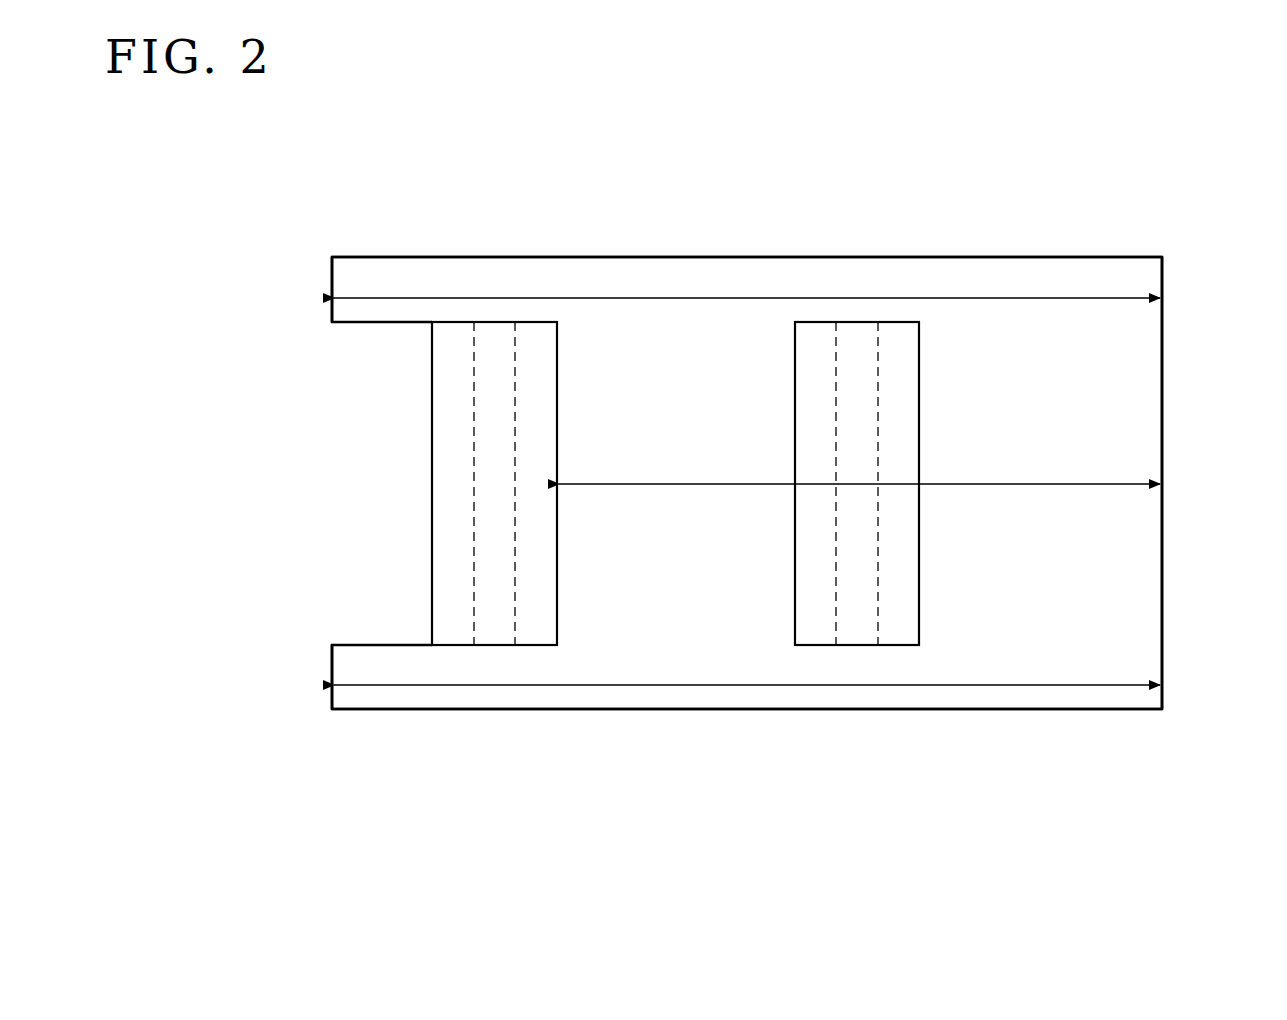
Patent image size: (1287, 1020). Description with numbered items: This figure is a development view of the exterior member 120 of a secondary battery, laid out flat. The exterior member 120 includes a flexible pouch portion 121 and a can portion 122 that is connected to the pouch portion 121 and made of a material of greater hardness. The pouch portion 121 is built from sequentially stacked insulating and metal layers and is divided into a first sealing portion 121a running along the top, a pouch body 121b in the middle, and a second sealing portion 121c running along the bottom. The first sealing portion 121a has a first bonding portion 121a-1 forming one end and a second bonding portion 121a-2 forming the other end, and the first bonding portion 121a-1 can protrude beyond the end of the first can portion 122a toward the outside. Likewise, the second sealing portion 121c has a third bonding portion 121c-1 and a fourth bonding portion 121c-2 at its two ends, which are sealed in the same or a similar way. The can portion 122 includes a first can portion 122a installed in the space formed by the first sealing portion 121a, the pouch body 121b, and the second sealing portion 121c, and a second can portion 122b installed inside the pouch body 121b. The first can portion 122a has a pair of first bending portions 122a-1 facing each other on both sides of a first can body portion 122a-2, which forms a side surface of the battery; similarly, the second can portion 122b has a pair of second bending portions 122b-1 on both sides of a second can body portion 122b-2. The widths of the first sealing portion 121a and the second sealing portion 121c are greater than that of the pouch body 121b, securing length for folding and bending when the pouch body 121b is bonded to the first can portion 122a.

The exterior member 120 is at (921, 207).
The pouch portion 121 is at (525, 201).
The first sealing portion 121a is at (527, 287).
The first bonding portion 121a-1 is at (332, 282).
The second bonding portion 121a-2 is at (1162, 285).
The pouch body 121b is at (616, 468).
The second sealing portion 121c is at (712, 667).
The third bonding portion 121c-1 is at (332, 693).
The fourth bonding portion 121c-2 is at (1162, 698).
The can portion 122 is at (473, 803).
The first can portion 122a is at (415, 760).
The first bending portions 122a-1 is at (457, 632).
The first can body portion 122a-2 is at (492, 632).
The second can portion 122b is at (780, 760).
The second bending portions 122b-1 is at (820, 632).
The second can body portion 122b-2 is at (855, 632).